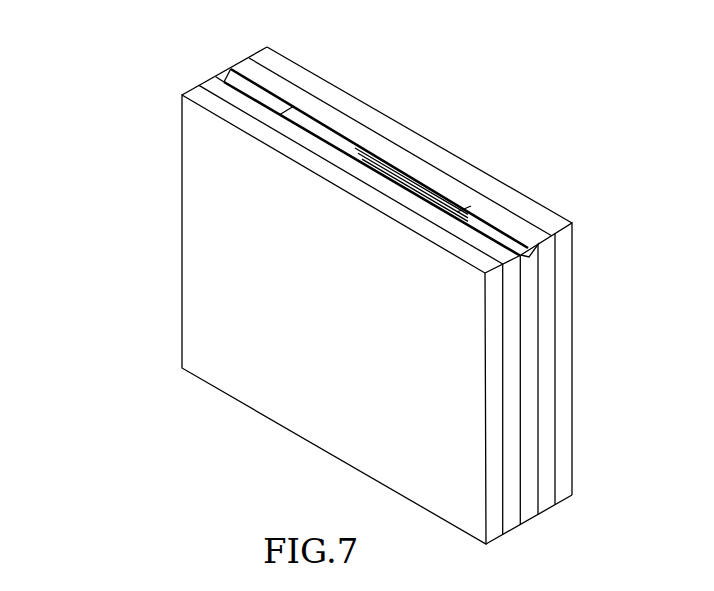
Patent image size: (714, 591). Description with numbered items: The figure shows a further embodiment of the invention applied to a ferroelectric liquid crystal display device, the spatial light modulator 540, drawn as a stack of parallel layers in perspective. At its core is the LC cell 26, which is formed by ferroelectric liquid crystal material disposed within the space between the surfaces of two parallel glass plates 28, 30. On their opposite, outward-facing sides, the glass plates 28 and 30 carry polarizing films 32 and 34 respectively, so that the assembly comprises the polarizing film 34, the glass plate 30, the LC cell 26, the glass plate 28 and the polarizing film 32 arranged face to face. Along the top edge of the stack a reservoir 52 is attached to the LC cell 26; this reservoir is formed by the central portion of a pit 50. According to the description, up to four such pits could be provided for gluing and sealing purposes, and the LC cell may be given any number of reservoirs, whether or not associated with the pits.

The spatial light modulator 540 is at (143, 45).
The polarizing film 34 is at (197, 190).
The glass plate 30 is at (238, 98).
The glass plate 28 is at (280, 83).
The reservoir 52 is at (386, 142).
The pit 50 is at (490, 222).
The polarizing film 32 is at (530, 193).
The LC cell 26 is at (530, 483).